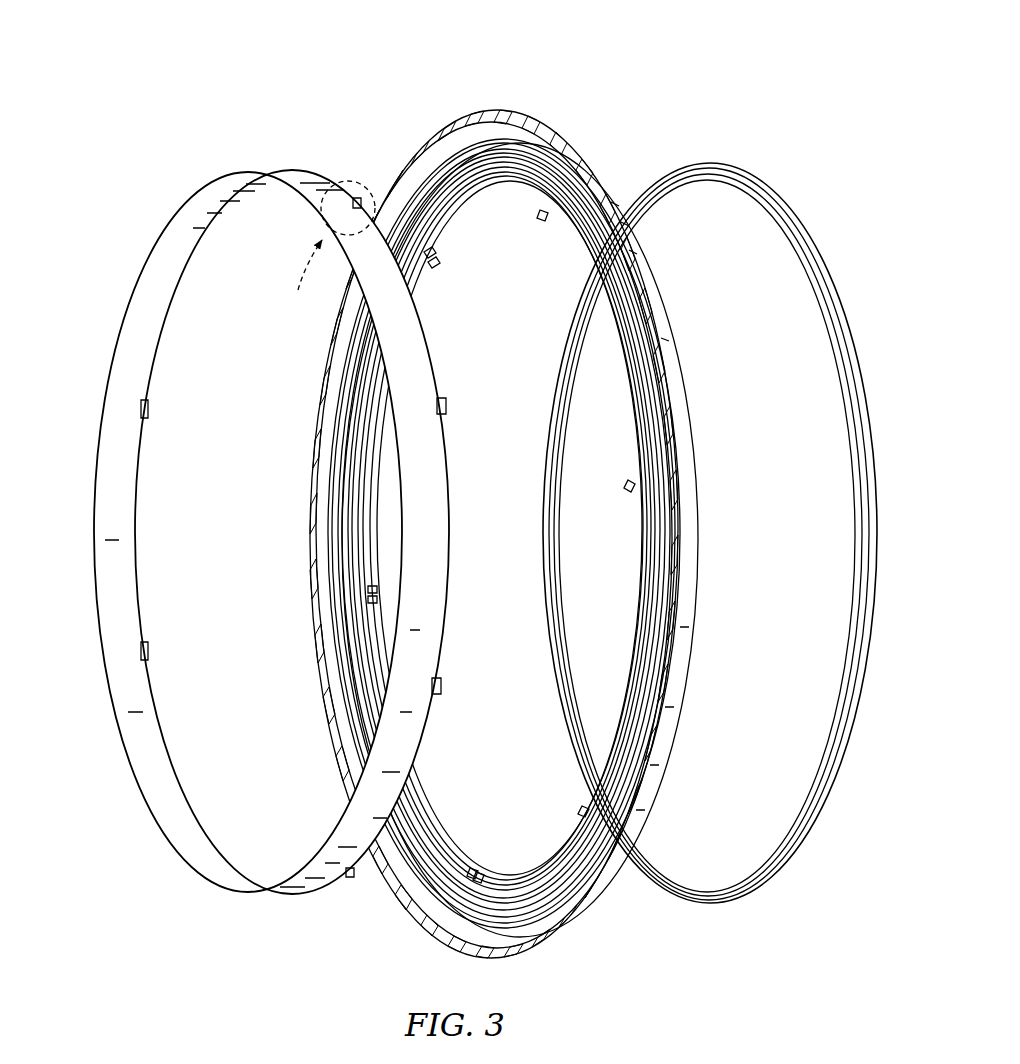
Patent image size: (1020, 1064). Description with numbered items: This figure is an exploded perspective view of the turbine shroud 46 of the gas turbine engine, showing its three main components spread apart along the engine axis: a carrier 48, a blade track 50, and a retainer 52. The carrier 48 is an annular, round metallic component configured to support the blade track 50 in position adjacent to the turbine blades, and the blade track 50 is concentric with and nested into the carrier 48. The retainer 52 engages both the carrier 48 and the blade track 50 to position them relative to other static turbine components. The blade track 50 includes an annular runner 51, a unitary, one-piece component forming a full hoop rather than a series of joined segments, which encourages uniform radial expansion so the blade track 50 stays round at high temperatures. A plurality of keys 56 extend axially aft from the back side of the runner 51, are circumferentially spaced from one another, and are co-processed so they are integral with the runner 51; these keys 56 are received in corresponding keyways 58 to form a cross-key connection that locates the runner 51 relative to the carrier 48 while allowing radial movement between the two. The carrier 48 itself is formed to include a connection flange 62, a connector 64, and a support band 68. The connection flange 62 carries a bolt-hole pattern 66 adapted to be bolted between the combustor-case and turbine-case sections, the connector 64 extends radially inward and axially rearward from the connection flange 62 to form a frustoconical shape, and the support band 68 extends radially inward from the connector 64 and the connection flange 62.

The turbine shroud 46 is at (660, 86).
The carrier 48 is at (504, 505).
The blade track 50 is at (291, 519).
The annular runner 51 is at (293, 174).
The retainer 52 is at (726, 158).
The keys 56 is at (237, 174).
The keyways 58 is at (432, 258).
The connection flange 62 is at (494, 505).
The connector 64 is at (613, 187).
The bolt-hole pattern 66 is at (446, 130).
The support band 68 is at (592, 267).